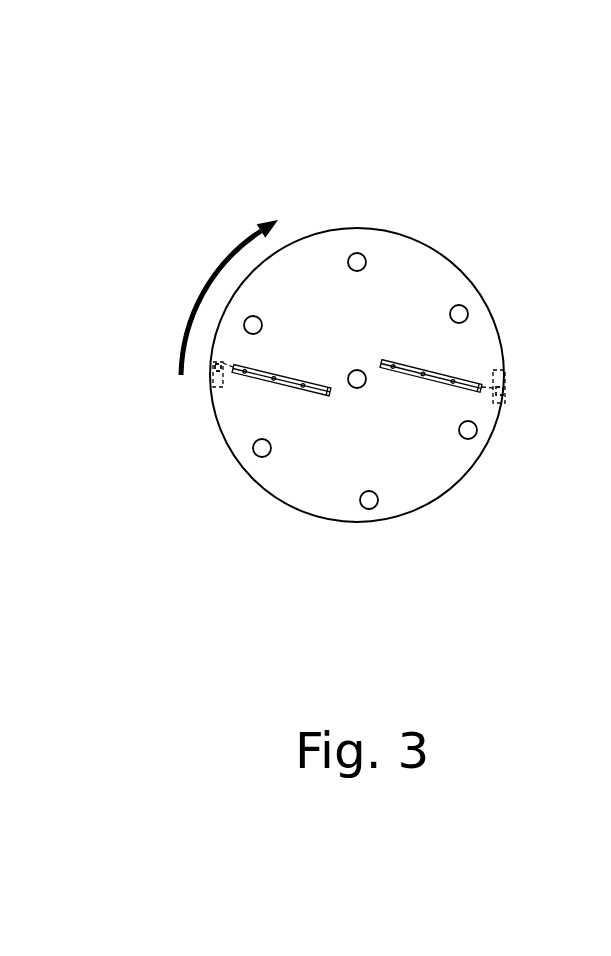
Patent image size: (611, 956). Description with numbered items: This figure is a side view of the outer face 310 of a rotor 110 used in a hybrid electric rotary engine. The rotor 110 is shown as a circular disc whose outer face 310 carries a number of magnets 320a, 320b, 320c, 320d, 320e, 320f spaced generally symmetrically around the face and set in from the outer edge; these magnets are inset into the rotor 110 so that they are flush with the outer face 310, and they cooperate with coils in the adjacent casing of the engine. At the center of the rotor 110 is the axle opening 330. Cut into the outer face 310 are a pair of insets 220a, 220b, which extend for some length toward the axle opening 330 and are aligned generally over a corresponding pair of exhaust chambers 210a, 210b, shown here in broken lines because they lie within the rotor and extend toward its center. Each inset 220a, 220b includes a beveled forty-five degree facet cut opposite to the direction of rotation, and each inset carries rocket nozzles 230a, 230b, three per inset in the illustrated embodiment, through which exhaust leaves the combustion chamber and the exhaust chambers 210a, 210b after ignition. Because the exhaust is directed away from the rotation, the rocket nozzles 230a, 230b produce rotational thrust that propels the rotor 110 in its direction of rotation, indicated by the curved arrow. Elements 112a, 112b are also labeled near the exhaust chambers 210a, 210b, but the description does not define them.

The rotor 110 is at (363, 77).
The outer face 310 is at (396, 472).
The magnet 320a is at (362, 251).
The magnet 320b is at (465, 305).
The magnet 320c is at (475, 438).
The magnet 320d is at (371, 509).
The magnet 320e is at (255, 454).
The magnet 320f is at (247, 320).
The axle opening 330 is at (355, 388).
The rocket nozzle 230a is at (281, 362).
The rocket nozzle 230b is at (431, 396).
The inset 220a is at (268, 378).
The inset 220b is at (463, 372).
The exhaust chamber 210a is at (217, 361).
The exhaust chamber 210b is at (503, 403).
The clamp 112a is at (217, 383).
The clamp 112b is at (505, 370).